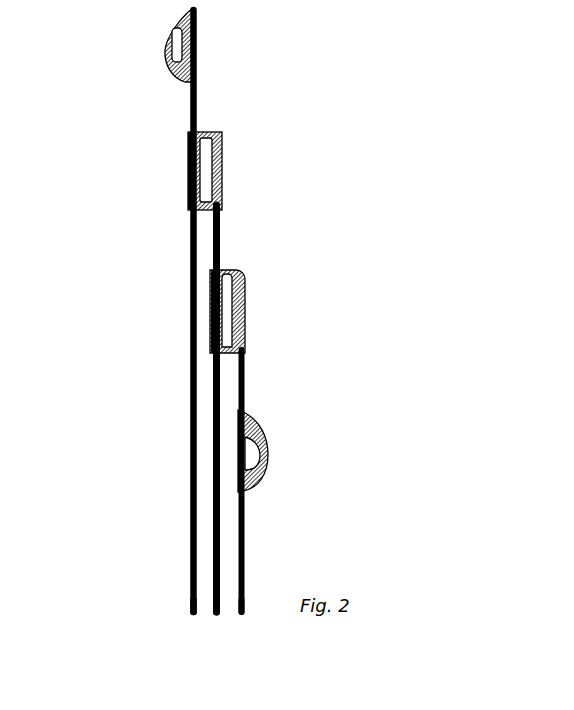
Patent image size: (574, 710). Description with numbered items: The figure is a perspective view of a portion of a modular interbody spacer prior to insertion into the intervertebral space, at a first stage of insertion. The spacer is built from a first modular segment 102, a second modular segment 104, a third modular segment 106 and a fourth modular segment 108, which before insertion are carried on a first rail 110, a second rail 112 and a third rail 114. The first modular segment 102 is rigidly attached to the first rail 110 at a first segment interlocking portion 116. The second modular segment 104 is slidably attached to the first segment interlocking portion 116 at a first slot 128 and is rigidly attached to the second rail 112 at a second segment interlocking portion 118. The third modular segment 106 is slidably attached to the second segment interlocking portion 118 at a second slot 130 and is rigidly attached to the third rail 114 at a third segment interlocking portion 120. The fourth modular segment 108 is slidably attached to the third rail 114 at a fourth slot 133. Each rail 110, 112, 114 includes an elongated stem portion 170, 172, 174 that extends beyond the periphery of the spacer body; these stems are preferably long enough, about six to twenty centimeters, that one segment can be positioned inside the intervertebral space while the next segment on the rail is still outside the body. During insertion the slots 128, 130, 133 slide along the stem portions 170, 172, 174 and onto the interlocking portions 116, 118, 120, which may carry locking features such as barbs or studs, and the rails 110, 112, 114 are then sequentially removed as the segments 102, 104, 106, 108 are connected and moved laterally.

The first modular segment 102 is at (168, 68).
The second modular segment 104 is at (188, 197).
The third modular segment 106 is at (220, 345).
The fourth modular segment 108 is at (240, 474).
The first rail 110 is at (203, 135).
The second rail 112 is at (223, 273).
The third rail 114 is at (255, 428).
The first segment interlocking portion 116 is at (200, 73).
The second segment interlocking portion 118 is at (220, 193).
The third segment interlocking portion 120 is at (240, 347).
The first slot 128 is at (188, 227).
The second slot 130 is at (220, 373).
The fourth slot 133 is at (240, 517).
The elongated stem portion 170 is at (193, 570).
The elongated stem portion 172 is at (215, 593).
The elongated stem portion 174 is at (242, 538).